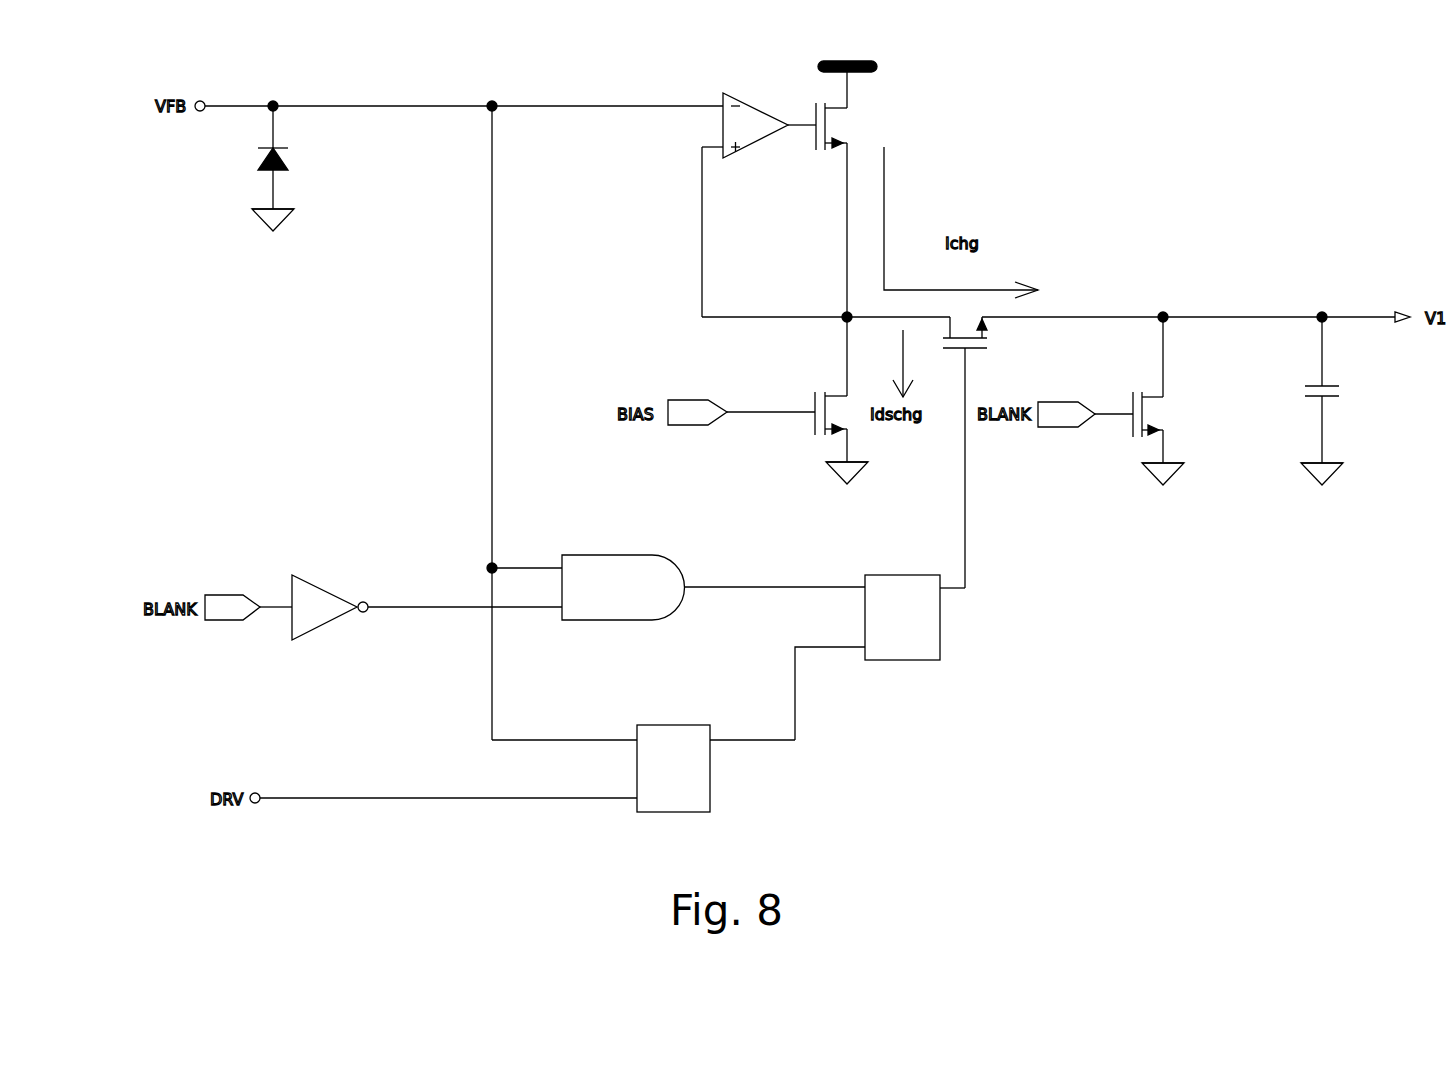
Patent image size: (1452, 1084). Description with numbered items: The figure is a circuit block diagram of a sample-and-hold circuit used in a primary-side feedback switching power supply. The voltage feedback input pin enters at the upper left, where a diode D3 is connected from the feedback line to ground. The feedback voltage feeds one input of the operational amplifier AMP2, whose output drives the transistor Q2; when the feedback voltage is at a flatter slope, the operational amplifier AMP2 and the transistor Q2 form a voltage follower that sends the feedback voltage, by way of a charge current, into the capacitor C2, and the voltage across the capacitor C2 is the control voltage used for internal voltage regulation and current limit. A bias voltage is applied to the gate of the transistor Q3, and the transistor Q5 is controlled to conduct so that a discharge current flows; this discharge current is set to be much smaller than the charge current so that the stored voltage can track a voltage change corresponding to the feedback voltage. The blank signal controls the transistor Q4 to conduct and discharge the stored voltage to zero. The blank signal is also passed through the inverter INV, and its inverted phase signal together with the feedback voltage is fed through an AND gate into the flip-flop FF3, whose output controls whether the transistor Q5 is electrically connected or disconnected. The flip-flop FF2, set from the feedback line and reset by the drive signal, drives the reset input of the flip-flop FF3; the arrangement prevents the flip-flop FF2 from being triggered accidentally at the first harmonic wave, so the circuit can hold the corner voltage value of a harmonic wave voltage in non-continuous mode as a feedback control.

The diode D3 is at (282, 168).
The operational amplifier AMP2 is at (746, 115).
The transistor Q2 is at (833, 189).
The transistor Q3 is at (797, 400).
The transistor Q4 is at (1144, 401).
The transistor Q5 is at (980, 452).
The capacitor C2 is at (1333, 401).
The inverter INV is at (411, 610).
The flip-flop FF2 is at (527, 768).
The flip-flop FF3 is at (896, 657).